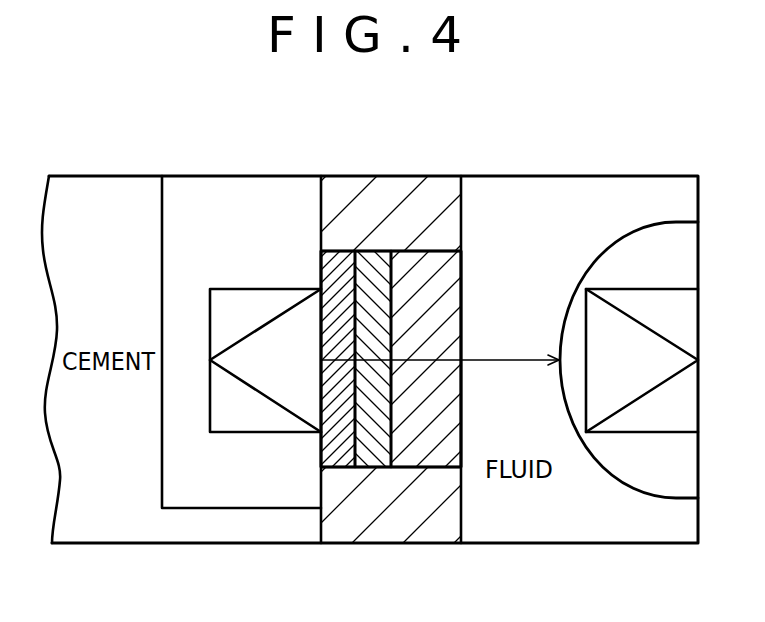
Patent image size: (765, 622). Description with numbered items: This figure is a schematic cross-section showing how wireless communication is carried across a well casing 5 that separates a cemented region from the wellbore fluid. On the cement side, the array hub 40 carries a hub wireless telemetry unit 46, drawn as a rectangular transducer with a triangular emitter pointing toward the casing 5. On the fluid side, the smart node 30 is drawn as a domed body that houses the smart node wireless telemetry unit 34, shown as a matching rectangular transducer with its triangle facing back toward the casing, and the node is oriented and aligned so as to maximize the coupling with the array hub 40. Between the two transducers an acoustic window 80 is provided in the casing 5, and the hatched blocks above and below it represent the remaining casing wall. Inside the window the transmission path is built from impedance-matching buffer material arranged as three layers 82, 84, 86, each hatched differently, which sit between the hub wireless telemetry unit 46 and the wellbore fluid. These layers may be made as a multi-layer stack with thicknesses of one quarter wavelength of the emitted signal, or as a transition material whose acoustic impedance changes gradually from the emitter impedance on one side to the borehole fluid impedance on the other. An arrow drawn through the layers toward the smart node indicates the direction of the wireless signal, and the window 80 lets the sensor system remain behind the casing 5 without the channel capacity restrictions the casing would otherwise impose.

The casing 5 is at (388, 544).
The smart node 30 is at (630, 233).
The smart node wireless telemetry unit 34 is at (645, 432).
The array hub 40 is at (162, 197).
The hub wireless telemetry unit 46 is at (258, 432).
The acoustic window 80 is at (439, 242).
The buffer material 82 is at (340, 272).
The buffer material 84 is at (372, 272).
The buffer material 86 is at (423, 275).